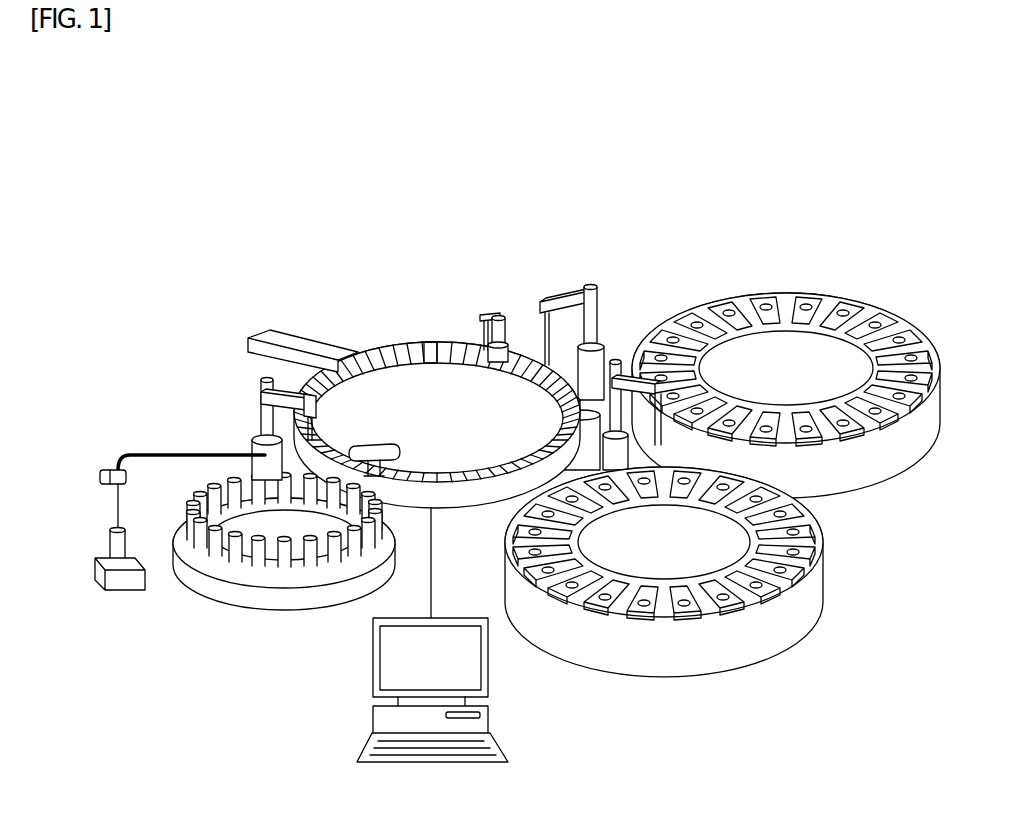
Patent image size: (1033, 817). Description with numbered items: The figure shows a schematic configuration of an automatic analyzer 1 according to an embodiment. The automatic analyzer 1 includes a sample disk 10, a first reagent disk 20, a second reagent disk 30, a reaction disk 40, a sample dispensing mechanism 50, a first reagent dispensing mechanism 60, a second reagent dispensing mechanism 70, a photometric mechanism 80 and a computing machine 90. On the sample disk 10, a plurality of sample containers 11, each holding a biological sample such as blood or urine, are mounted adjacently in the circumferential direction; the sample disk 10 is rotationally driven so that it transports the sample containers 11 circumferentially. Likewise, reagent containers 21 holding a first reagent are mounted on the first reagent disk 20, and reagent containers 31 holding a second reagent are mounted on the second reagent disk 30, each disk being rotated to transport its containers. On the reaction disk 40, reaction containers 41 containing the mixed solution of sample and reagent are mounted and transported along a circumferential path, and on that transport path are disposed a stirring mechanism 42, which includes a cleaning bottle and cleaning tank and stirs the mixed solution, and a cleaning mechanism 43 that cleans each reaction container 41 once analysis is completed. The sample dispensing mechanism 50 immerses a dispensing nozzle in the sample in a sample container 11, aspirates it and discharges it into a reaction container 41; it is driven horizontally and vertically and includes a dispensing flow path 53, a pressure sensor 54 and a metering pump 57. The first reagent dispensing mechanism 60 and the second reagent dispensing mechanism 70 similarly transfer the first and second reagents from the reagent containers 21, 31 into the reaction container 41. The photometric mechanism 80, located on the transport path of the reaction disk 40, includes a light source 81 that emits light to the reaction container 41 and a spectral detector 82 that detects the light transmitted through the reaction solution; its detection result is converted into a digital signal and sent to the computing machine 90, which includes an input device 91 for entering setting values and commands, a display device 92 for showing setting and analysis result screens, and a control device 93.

The automatic analyzer 1 is at (727, 141).
The sample disk 10 is at (221, 618).
The sample container 11 is at (307, 562).
The first reagent disk 20 is at (765, 283).
The reagent container 21 is at (853, 300).
The second reagent disk 30 is at (797, 660).
The reagent container 31 is at (710, 605).
The reaction disk 40 is at (408, 328).
The reaction container 41 is at (432, 344).
The stirring mechanism 42 is at (487, 313).
The cleaning mechanism 43 is at (405, 453).
The sample dispensing mechanism 50 is at (146, 481).
The dispensing flow path 53 is at (158, 440).
The pressure sensor 54 is at (100, 474).
The metering pump 57 is at (120, 590).
The first reagent dispensing mechanism 60 is at (568, 281).
The second reagent dispensing mechanism 70 is at (620, 320).
The photometric mechanism 80 is at (303, 340).
The light source 81 is at (338, 372).
The spectral detector 82 is at (297, 342).
The computing machine 90 is at (410, 646).
The input device 91 is at (500, 743).
The display device 92 is at (463, 660).
The control device 93 is at (478, 714).